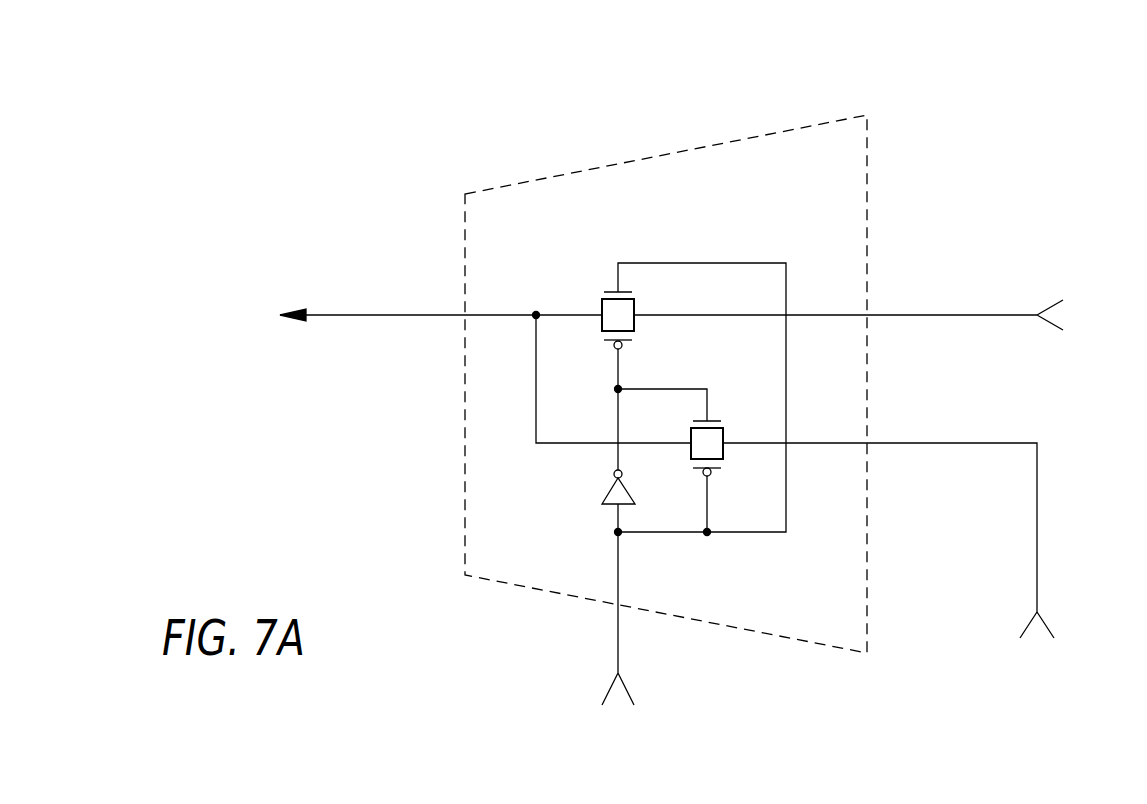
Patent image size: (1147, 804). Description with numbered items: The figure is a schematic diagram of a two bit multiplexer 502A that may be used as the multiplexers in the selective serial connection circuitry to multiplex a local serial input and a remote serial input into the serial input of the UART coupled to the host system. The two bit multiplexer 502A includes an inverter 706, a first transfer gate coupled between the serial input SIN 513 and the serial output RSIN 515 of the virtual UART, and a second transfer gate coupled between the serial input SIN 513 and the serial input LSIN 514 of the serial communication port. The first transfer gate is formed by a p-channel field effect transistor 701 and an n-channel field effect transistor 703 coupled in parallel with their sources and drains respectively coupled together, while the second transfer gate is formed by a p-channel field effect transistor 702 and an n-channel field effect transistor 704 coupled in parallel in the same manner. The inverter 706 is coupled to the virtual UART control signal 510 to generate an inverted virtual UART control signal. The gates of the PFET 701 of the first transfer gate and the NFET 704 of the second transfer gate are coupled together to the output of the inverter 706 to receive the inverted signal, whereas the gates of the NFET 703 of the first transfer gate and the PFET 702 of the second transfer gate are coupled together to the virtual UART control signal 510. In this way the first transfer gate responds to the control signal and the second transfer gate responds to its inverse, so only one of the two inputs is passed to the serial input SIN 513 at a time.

The two bit multiplexer 502A is at (665, 157).
The serial input SIN 513 is at (396, 315).
The serial output RSIN 515 is at (922, 315).
The serial input LSIN 514 is at (942, 443).
The p-channel field effect transistor (PFET) 701 is at (636, 322).
The p-channel field effect transistor (PFET) 702 is at (725, 450).
The n-channel field effect transistor (NFET) 703 is at (635, 310).
The n-channel field effect transistor (NFET) 704 is at (725, 437).
The inverter 706 is at (600, 489).
The virtual UART control (VUC) signal 510 is at (618, 638).